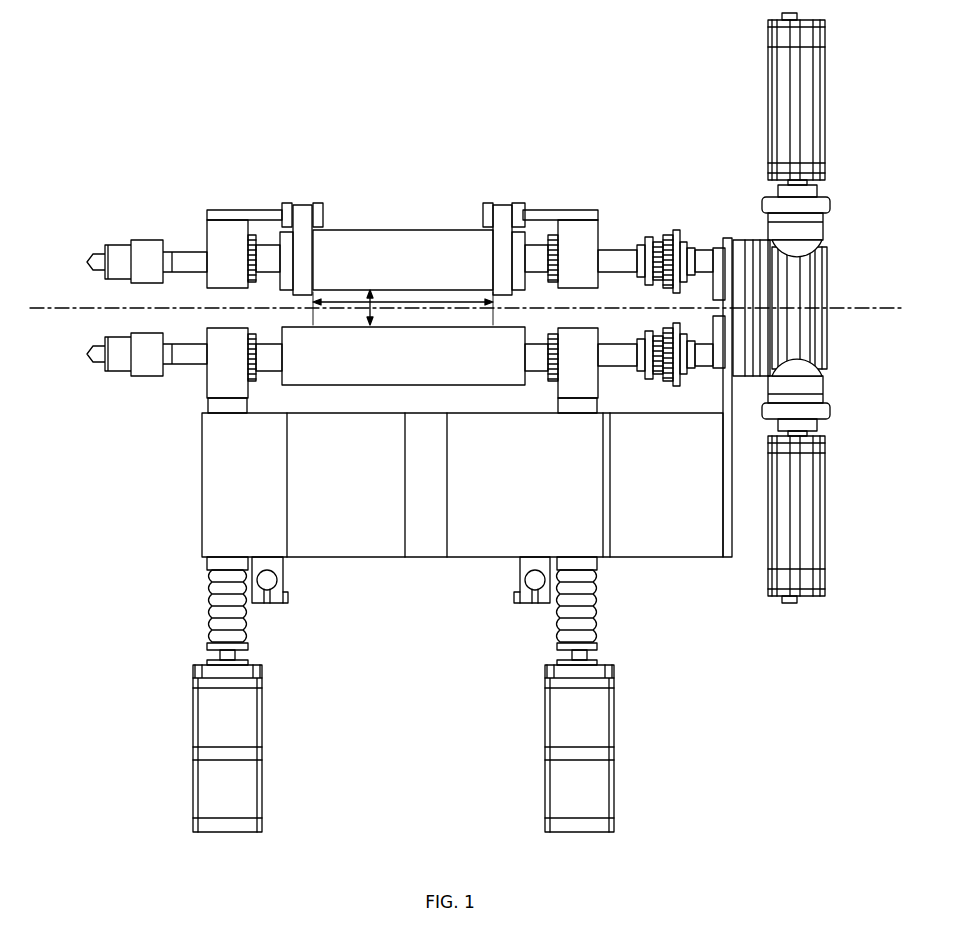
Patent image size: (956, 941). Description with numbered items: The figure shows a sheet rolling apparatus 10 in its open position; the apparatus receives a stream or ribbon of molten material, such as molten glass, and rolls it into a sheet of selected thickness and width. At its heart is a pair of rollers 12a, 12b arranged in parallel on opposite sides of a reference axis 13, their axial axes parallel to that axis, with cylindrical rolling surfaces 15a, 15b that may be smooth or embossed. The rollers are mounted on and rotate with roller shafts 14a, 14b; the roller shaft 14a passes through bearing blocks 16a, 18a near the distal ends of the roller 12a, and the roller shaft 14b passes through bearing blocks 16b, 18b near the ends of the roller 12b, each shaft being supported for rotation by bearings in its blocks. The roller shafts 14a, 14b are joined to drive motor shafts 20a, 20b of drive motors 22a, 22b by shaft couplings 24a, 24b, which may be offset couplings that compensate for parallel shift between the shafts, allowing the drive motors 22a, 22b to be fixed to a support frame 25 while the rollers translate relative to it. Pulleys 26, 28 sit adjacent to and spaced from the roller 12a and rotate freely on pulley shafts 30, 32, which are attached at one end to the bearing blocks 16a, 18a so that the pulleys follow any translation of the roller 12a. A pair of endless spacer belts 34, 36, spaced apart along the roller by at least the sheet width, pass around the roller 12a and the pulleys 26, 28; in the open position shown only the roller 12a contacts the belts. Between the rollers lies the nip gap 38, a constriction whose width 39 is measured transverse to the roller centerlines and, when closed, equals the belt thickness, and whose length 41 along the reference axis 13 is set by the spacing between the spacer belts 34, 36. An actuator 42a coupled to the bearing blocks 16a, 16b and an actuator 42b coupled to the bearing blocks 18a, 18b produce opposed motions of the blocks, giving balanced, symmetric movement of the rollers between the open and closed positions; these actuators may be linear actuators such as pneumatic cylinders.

The sheet rolling apparatus 10 is at (409, 140).
The roller 12a is at (402, 239).
The roller 12b is at (403, 398).
The reference axis 13 is at (48, 307).
The roller shaft 14a is at (270, 257).
The roller shaft 14b is at (272, 364).
The cylindrical rolling surface 15a is at (397, 240).
The cylindrical rolling surface 15b is at (333, 376).
The bearing block 16a is at (222, 232).
The bearing block 16b is at (212, 378).
The bearing block 18a is at (578, 230).
The bearing block 18b is at (580, 390).
The drive motor shaft 20a is at (702, 268).
The drive motor shaft 20b is at (708, 312).
The drive motor 22a is at (826, 83).
The drive motor 22b is at (826, 507).
The shaft coupling 24a is at (663, 243).
The shaft coupling 24b is at (707, 312).
The support frame 25 is at (678, 558).
The pulley 26 is at (318, 203).
The pulley 28 is at (518, 203).
The pulley shaft 30 is at (238, 212).
The pulley shaft 32 is at (551, 213).
The spacer belt 34 is at (303, 213).
The spacer belt 36 is at (502, 215).
The nip gap 38 is at (475, 320).
The width of the nip gap 39 is at (368, 316).
The length of the nip gap 41 is at (413, 304).
The actuator 42a is at (193, 727).
The actuator 42b is at (614, 728).